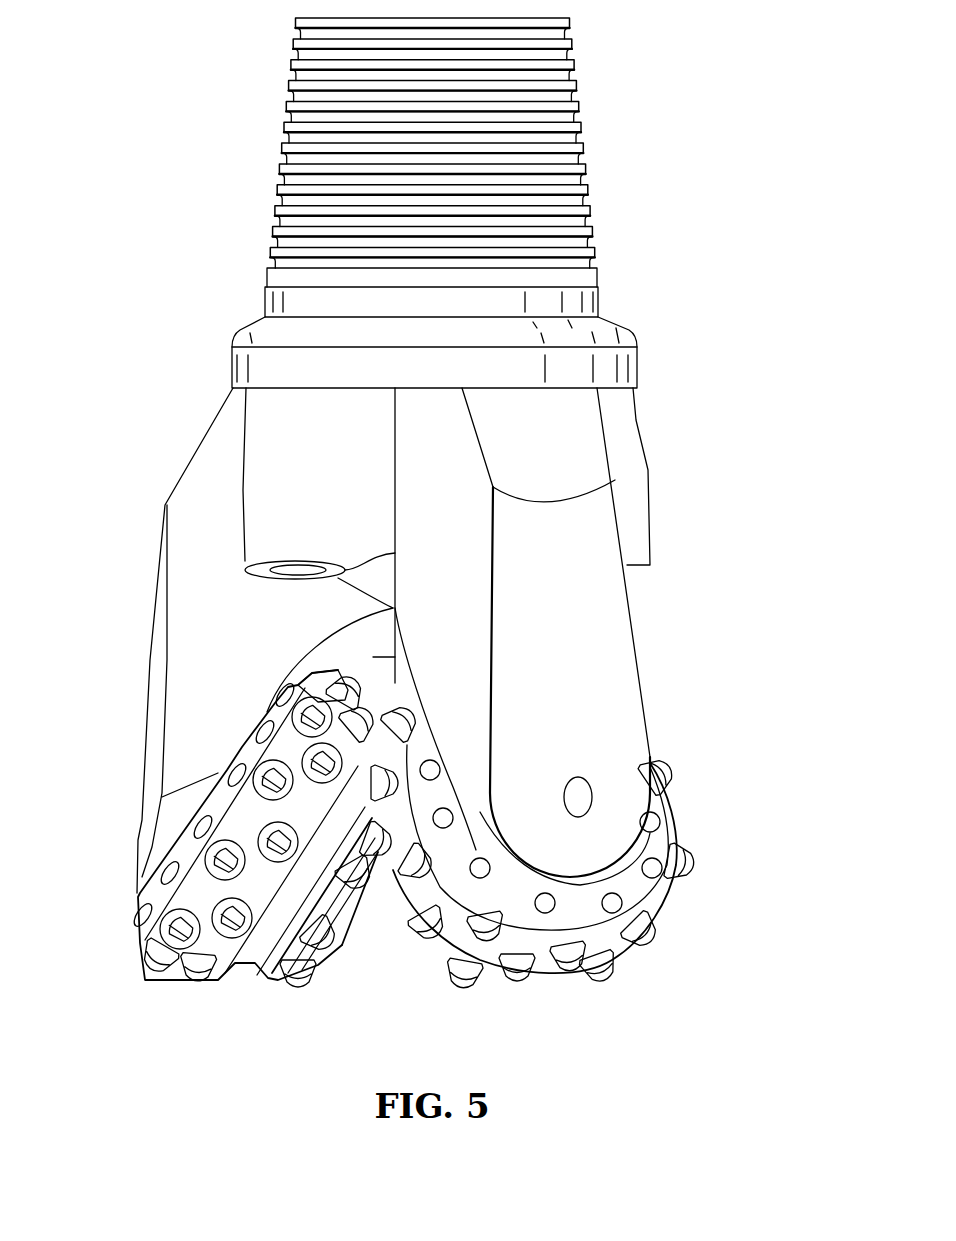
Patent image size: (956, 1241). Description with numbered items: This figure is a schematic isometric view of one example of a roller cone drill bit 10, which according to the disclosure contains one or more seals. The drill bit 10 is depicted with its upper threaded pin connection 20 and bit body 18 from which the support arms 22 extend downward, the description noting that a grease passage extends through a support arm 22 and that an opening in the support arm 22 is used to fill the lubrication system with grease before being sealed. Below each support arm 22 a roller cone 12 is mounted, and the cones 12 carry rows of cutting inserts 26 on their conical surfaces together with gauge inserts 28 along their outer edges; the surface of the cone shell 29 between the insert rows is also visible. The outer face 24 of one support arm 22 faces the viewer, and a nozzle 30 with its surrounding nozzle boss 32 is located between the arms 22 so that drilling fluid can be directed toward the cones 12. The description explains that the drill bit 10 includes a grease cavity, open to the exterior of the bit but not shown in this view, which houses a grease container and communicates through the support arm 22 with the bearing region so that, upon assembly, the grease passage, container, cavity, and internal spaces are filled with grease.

The drill bit 10 is at (727, 513).
The roller cone 12 is at (630, 967).
The bit body 18 is at (648, 446).
The threaded pin connection 20 is at (582, 128).
The support arm 22 is at (144, 662).
The leg outer surface 24 is at (546, 673).
The cutting insert 26 is at (280, 691).
The gauge insert 28 is at (466, 994).
The cone shell surface 29 is at (185, 857).
The nozzle 30 is at (287, 571).
The nozzle boss 32 is at (390, 578).